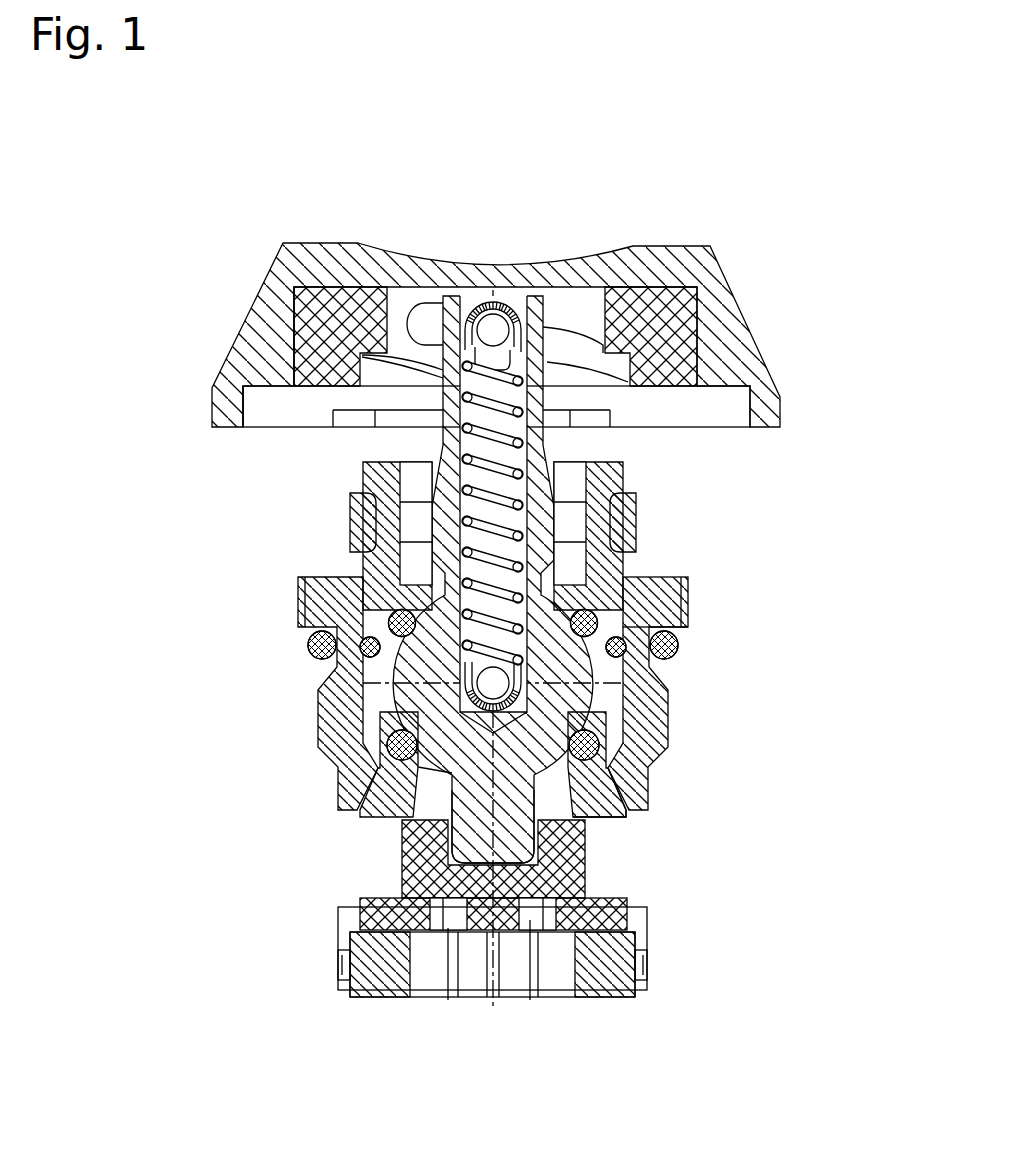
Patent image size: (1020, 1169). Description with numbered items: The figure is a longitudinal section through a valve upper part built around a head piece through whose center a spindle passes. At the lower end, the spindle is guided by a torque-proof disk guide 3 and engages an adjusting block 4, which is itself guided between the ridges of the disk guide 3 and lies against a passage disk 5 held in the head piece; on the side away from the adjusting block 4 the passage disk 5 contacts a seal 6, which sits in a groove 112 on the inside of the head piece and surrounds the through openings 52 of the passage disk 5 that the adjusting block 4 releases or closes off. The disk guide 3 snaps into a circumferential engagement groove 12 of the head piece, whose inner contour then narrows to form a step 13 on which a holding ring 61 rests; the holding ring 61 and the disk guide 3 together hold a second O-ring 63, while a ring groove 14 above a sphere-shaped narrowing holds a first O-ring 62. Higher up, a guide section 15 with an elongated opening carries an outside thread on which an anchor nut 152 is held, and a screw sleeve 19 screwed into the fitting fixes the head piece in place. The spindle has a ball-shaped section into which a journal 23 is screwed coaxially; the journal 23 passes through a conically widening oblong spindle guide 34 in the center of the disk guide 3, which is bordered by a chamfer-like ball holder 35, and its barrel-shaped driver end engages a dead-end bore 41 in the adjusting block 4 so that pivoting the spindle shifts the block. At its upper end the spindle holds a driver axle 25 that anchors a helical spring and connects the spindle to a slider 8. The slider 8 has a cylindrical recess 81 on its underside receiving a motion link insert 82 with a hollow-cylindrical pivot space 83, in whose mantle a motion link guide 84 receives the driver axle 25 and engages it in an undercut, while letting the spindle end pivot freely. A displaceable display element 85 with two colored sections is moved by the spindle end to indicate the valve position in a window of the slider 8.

The disk guide 3 is at (622, 812).
The adjusting block 4 is at (400, 857).
The passage disk 5 is at (627, 913).
The seal 6 is at (627, 990).
The slider 8 is at (733, 288).
The engagement groove 12 is at (607, 783).
The step 13 is at (605, 710).
The ring groove 14 is at (602, 623).
The guide section 15 is at (623, 480).
The screw sleeve 19 is at (686, 577).
The journal 23 is at (508, 838).
The driver axle 25 is at (487, 322).
The spindle guide 34 is at (437, 802).
The ball holder 35 is at (603, 750).
The dead-end bore 41 is at (573, 870).
The through openings 52 is at (530, 1000).
The holding ring 61 is at (385, 718).
The first O-ring 62 is at (392, 626).
The second O-ring 63 is at (383, 752).
The recess 81 is at (290, 320).
The motion link insert 82 is at (335, 315).
The pivot space 83 is at (585, 302).
The motion link guide 84 is at (572, 350).
The display element 85 is at (583, 418).
The groove 112 is at (647, 965).
The anchor nut 152 is at (350, 525).